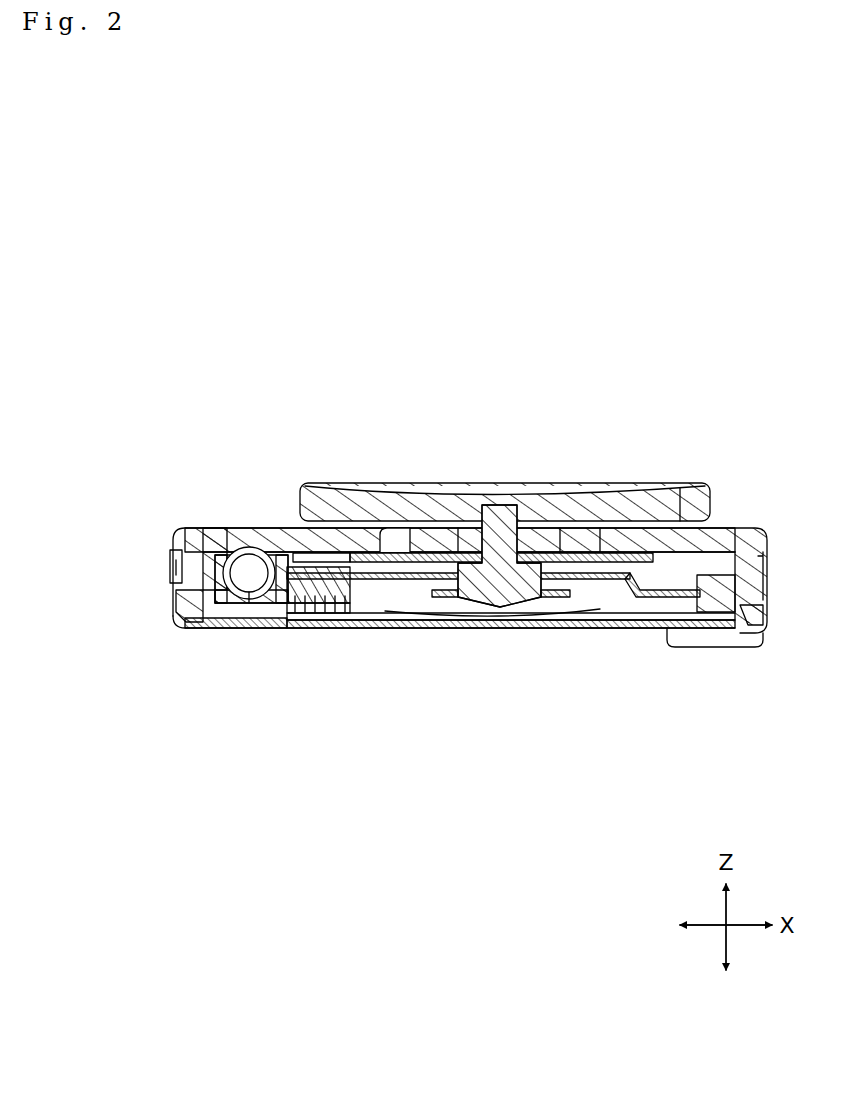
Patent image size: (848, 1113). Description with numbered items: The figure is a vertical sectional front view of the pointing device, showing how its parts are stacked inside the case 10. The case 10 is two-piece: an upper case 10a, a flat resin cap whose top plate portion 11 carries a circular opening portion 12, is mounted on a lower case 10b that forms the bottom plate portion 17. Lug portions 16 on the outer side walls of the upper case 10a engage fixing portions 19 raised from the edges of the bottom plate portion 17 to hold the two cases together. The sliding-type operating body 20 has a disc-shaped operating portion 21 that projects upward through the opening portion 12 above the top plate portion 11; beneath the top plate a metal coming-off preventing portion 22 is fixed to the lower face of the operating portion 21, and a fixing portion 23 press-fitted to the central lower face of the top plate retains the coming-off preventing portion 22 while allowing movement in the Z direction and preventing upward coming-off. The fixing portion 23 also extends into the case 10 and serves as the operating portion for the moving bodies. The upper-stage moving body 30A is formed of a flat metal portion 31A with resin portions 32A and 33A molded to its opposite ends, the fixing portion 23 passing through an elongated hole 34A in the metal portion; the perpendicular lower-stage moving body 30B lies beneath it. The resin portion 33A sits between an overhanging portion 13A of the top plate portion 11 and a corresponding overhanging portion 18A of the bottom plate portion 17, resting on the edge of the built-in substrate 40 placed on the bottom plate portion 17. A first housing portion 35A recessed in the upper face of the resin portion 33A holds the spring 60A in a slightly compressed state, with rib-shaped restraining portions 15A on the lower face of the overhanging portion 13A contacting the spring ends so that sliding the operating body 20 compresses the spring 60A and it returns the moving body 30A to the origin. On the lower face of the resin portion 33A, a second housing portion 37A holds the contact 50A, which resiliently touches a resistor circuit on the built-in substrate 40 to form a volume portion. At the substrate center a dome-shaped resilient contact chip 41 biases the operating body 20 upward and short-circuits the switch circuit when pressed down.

The case 10 is at (781, 586).
The upper case 10a is at (736, 526).
The lower case 10b is at (628, 638).
The top plate portion 11 is at (352, 528).
The circular opening portion 12 is at (594, 540).
The overhanging portion 13A is at (234, 528).
The restraining portion 15A is at (253, 630).
The lug portion 16 is at (172, 597).
The bottom plate portion 17 is at (595, 630).
The overhanging portion 18A is at (213, 630).
The fixing portion 19 is at (170, 567).
The operating body 20 is at (462, 478).
The operating portion 21 is at (628, 492).
The coming-off preventing portion 22 is at (427, 548).
The fixing portion 23 is at (513, 630).
The moving body 30A is at (673, 574).
The moving body 30B is at (567, 630).
The metal portion 31A is at (387, 630).
The resin portion 32A is at (718, 612).
The resin portion 33A is at (230, 630).
The elongated hole 34A is at (562, 548).
The first housing portion 35A is at (197, 528).
The second housing portion 37A is at (306, 630).
The built-in substrate 40 is at (472, 630).
The resilient contact chip 41 is at (444, 630).
The contact 50A is at (327, 630).
The spring 60A is at (260, 528).